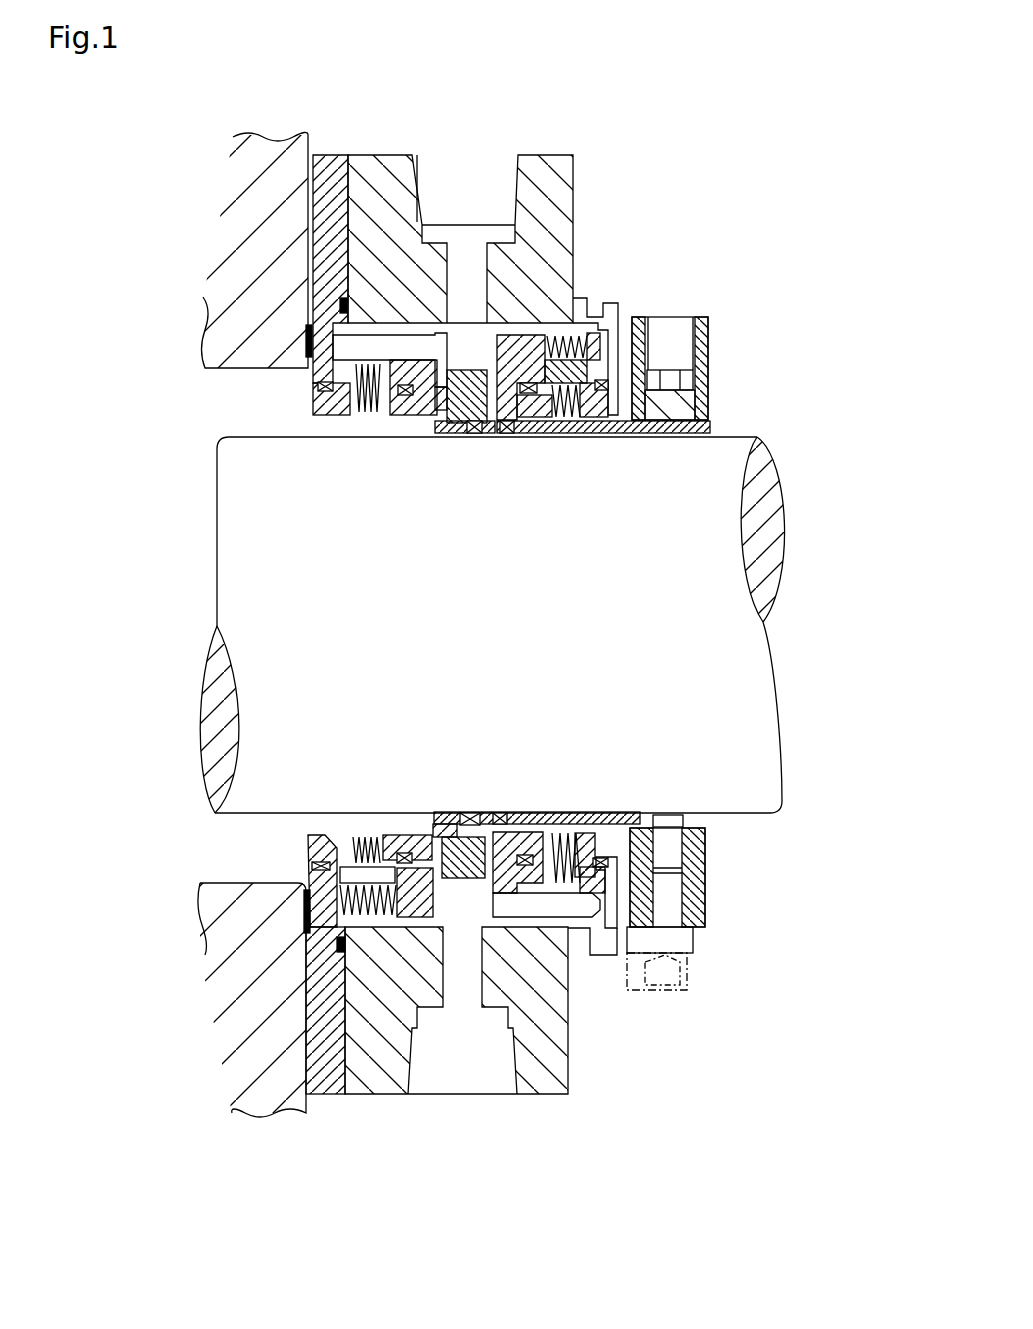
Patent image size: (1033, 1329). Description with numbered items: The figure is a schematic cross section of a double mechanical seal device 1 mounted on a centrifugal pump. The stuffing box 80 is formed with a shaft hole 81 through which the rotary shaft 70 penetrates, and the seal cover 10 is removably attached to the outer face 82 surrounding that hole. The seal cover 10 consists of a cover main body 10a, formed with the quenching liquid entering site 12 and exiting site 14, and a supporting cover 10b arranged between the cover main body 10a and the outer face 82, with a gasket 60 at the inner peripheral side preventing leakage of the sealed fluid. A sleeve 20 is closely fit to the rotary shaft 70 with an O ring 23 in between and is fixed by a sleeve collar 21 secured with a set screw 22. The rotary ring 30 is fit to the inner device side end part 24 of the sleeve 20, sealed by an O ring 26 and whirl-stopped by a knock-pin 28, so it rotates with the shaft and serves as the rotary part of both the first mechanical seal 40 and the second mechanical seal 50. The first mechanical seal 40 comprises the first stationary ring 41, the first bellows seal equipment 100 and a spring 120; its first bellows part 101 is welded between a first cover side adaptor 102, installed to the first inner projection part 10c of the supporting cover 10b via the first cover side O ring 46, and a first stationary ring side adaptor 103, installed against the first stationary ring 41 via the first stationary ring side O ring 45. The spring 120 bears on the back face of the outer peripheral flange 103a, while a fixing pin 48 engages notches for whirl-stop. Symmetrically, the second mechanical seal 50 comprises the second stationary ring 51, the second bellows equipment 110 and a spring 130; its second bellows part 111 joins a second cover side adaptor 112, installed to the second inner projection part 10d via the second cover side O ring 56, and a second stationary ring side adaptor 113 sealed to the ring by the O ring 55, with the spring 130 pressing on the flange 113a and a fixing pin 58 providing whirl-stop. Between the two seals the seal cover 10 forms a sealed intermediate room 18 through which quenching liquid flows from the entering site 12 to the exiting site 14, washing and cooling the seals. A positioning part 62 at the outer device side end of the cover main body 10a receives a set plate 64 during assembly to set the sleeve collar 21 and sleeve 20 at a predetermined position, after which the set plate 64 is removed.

The double mechanical seal device 1 is at (592, 171).
The seal cover 10 is at (385, 150).
The cover main body 10a is at (552, 160).
The supporting cover 10b is at (335, 155).
The first inner projection part 10c is at (318, 384).
The second inner projection part 10d is at (603, 363).
The quenching liquid entering site 12 is at (463, 993).
The quenching liquid exiting site 14 is at (472, 262).
The intermediate room 18 is at (566, 950).
The sleeve 20 is at (605, 813).
The sleeve collar 21 is at (697, 876).
The set screw 22 is at (708, 397).
The O ring 23 is at (500, 813).
The inner device side end part 24 is at (455, 813).
The O ring 26 is at (465, 813).
The knock-pin 28 is at (445, 813).
The rotary ring 30 is at (470, 432).
The first mechanical seal 40 is at (417, 423).
The first stationary ring 41 is at (445, 430).
The first stationary ring side O ring 45 is at (380, 838).
The first cover side O ring 46 is at (242, 417).
The fixing pin 48 is at (385, 340).
The second mechanical seal 50 is at (487, 357).
The second stationary ring 51 is at (493, 435).
The second stationary ring side O ring 55 is at (530, 813).
The second cover side O ring 56 is at (650, 830).
The fixing pin 58 is at (546, 905).
The gasket 60 is at (305, 330).
The positioning part 62 is at (606, 947).
The set plate 64 is at (680, 943).
The rotary shaft 70 is at (742, 660).
The stuffing box 80 is at (232, 920).
The shaft hole 81 is at (237, 880).
The outer face 82 is at (317, 1103).
The first bellows seal equipment 100 is at (390, 553).
The first bellows part 101 is at (357, 423).
The first cover side adaptor 102 is at (330, 425).
The first stationary ring side adaptor 103 is at (392, 423).
The outer peripheral flange 103a is at (343, 952).
The second bellows seal equipment 110 is at (694, 553).
The second bellows part 111 is at (566, 420).
The second cover side adaptor 112 is at (614, 420).
The second stationary ring side adaptor 113 is at (515, 420).
The outer peripheral flange 113a is at (535, 338).
The spring 120 is at (335, 962).
The spring 130 is at (560, 328).